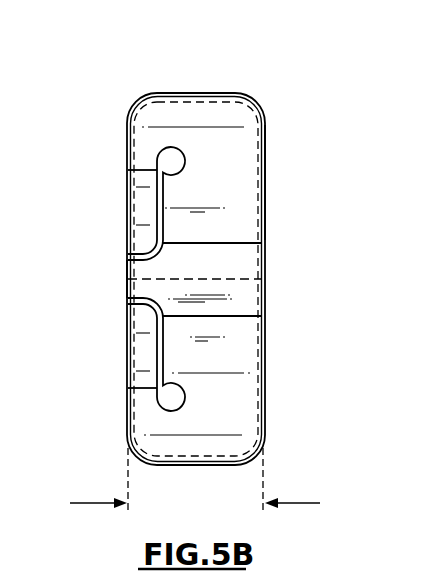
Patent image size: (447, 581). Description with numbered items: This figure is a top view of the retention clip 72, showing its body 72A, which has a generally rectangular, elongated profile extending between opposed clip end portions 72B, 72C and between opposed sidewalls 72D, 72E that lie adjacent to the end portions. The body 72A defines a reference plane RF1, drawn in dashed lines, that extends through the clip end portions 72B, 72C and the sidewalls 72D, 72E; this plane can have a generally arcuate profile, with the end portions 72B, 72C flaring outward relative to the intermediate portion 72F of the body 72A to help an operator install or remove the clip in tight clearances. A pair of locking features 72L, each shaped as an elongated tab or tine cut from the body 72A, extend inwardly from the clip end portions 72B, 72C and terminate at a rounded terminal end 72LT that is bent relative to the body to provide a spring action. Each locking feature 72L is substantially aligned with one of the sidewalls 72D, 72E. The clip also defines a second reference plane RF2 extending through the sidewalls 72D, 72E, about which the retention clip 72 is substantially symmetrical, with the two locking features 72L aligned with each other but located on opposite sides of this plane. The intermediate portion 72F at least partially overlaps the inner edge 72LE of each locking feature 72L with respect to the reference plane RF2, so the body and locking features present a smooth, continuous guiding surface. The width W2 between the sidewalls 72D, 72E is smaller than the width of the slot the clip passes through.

The retention clip 72 is at (107, 76).
The clip end portion 72B is at (247, 118).
The clip end portion 72C is at (248, 440).
The reference plane RF1 is at (263, 155).
The reference plane RF2 is at (228, 283).
The locking feature 72L is at (140, 218).
The terminal end 72LT is at (140, 245).
The inner edge 72LE is at (165, 205).
The body 72A is at (240, 222).
The sidewall 72D is at (130, 280).
The sidewall 72E is at (265, 290).
The intermediate portion 72F is at (130, 290).
The width W2 is at (92, 503).